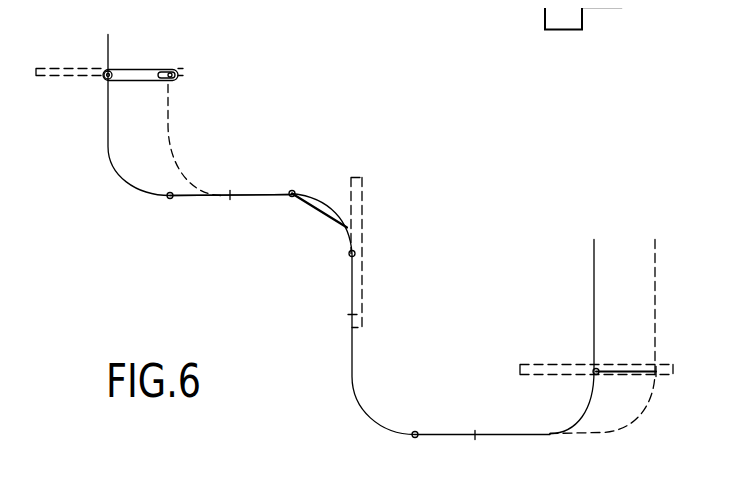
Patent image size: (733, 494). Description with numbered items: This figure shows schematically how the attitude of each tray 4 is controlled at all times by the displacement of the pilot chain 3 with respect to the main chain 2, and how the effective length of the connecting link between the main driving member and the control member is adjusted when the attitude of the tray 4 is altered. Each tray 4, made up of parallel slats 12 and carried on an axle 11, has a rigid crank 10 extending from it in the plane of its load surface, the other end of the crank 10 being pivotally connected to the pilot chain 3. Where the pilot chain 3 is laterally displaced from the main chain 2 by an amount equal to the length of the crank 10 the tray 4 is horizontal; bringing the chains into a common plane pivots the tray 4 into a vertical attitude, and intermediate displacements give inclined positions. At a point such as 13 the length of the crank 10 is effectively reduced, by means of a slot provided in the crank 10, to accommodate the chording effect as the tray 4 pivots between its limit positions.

The main chain 2 is at (109, 130).
The pilot chain 3 is at (170, 122).
The tray 4 is at (73, 60).
The crank 10 is at (140, 69).
The axle 11 is at (103, 79).
The slat 12 is at (172, 71).
The point of effectively reduced crank length 13 is at (327, 192).